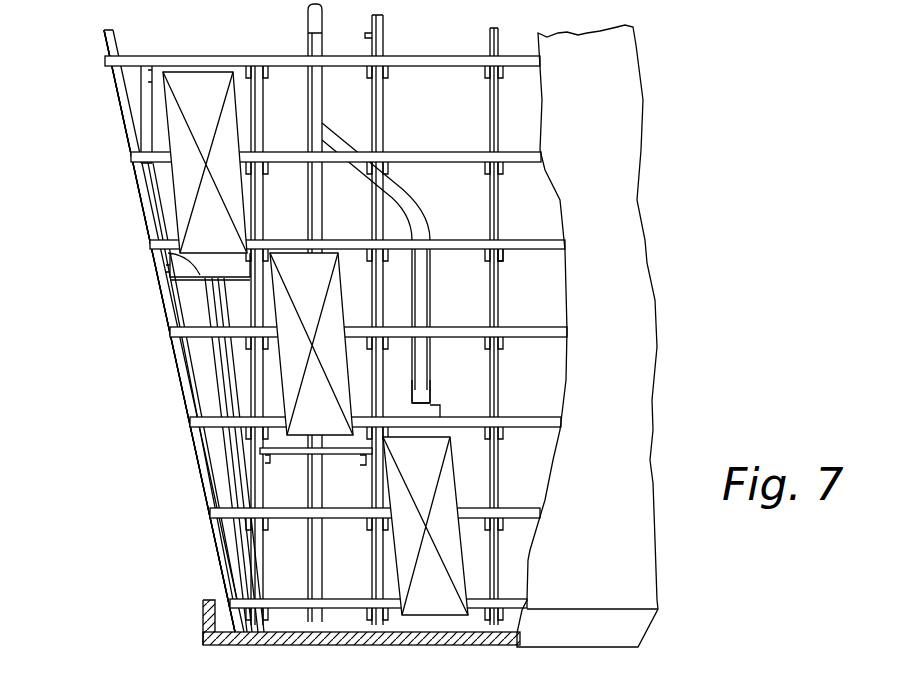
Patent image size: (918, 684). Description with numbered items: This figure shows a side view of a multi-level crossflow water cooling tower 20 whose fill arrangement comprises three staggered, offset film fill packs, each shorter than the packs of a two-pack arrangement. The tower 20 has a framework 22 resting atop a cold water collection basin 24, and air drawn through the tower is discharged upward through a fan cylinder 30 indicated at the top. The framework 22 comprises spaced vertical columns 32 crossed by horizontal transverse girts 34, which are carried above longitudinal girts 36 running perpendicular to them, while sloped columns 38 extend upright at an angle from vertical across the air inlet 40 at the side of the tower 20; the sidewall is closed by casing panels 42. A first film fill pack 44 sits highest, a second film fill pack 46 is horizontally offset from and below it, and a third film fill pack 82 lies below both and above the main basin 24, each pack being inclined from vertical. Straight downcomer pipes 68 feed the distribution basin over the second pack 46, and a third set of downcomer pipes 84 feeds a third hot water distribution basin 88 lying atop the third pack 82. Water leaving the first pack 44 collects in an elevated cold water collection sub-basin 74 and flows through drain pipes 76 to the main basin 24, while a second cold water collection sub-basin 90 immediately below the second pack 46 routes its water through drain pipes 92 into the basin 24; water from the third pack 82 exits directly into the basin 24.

The crossflow water cooling tower 20 is at (142, 466).
The framework 22 is at (108, 108).
The cold water collection basin 24 is at (392, 647).
The fan cylinder 30 is at (226, 30).
The vertical columns 32 is at (493, 117).
The transverse girts 34 is at (482, 242).
The longitudinal girts 36 is at (501, 258).
The sloped columns 38 is at (140, 200).
The air inlet 40 is at (174, 393).
The casing panels 42 is at (587, 336).
The first film fill pack 44 is at (232, 106).
The second film fill pack 46 is at (268, 312).
The downcomer pipes 68 is at (310, 210).
The cold water collection sub-basin 74 is at (170, 254).
The drain pipes 76 is at (228, 432).
The third film fill pack 82 is at (470, 548).
The third set of downcomer pipes 84 is at (425, 392).
The third hot water distribution basin 88 is at (435, 413).
The second cold water collection sub-basin 90 is at (293, 447).
The drain pipes 92 is at (318, 503).